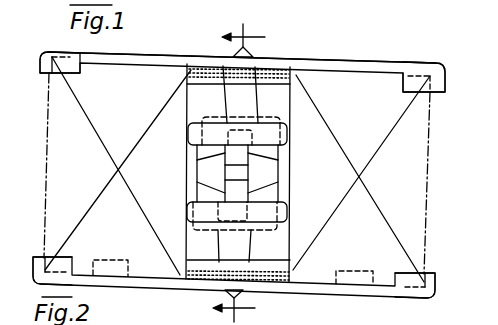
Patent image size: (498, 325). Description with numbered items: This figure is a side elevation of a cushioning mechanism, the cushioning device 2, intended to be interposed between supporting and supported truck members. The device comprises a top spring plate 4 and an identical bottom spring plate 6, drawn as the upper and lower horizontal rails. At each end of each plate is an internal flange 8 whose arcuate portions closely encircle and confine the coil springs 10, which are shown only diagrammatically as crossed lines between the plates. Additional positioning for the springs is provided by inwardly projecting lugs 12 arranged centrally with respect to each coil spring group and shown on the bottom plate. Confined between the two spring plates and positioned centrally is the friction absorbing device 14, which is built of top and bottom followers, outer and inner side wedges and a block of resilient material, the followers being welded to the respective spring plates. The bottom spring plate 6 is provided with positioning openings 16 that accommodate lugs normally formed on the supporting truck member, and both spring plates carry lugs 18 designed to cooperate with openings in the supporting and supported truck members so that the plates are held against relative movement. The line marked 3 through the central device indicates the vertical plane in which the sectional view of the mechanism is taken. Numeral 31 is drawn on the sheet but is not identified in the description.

The cushioning device 2 is at (438, 63).
The section line 3— 3 is at (239, 165).
The top spring plate 4 is at (346, 62).
The bottom spring plate 6 is at (352, 298).
The internal flange 8 is at (45, 60).
The coil springs 10 is at (113, 168).
The inwardly projecting lugs 12 is at (113, 258).
The friction absorbing device 14 is at (188, 141).
The positioning openings 16 is at (149, 287).
The lugs 18 is at (250, 55).
The cushion pads 31 is at (203, 64).